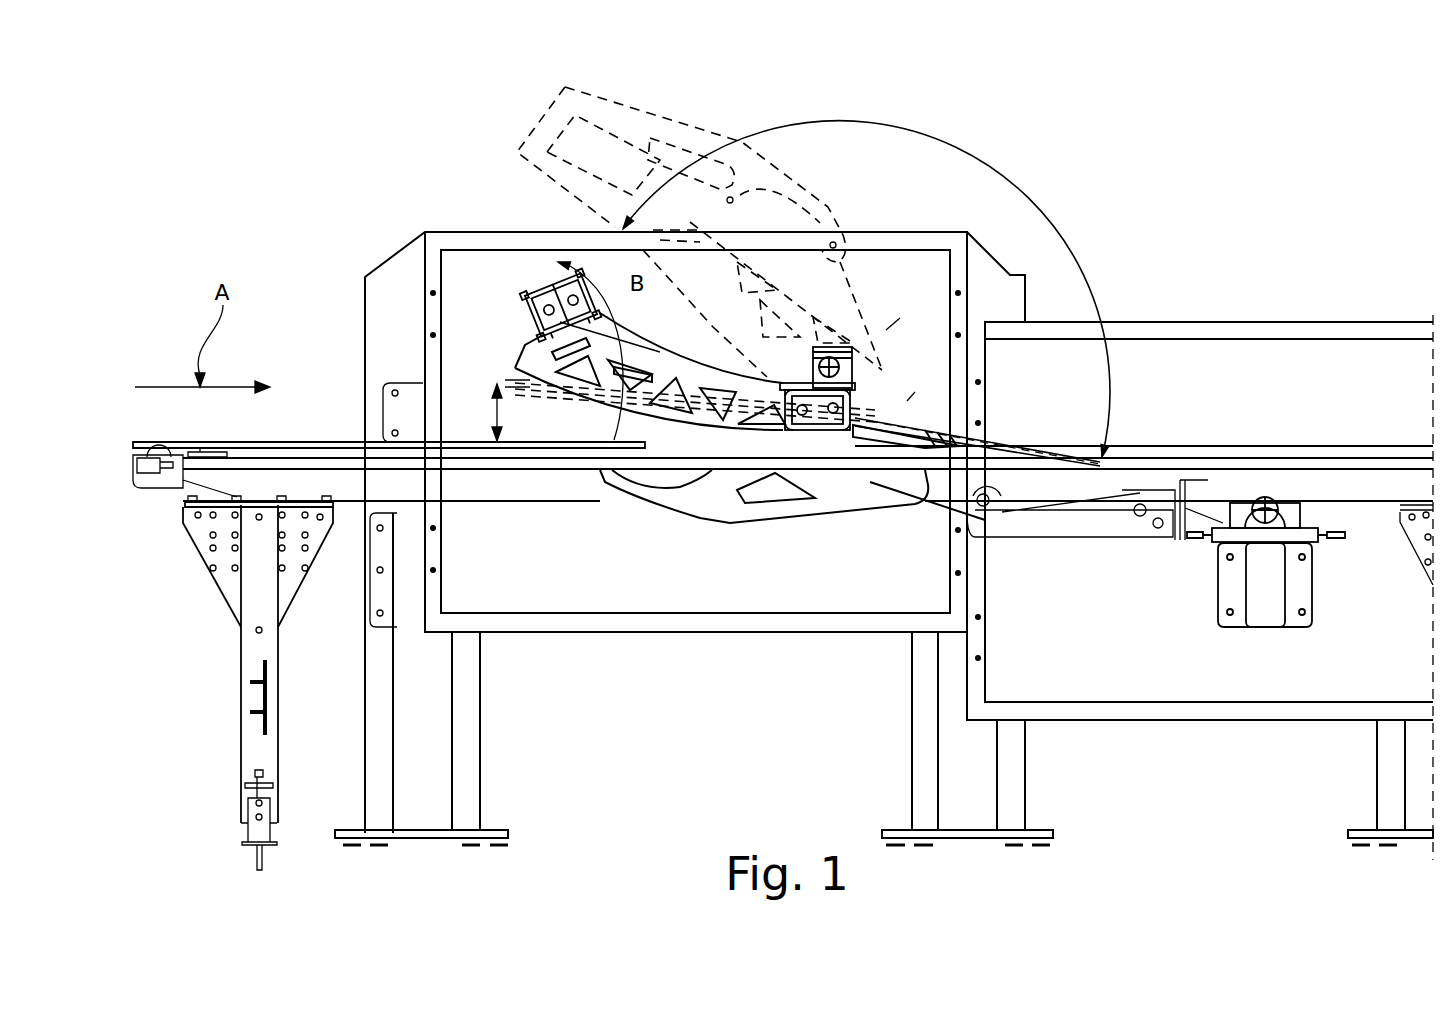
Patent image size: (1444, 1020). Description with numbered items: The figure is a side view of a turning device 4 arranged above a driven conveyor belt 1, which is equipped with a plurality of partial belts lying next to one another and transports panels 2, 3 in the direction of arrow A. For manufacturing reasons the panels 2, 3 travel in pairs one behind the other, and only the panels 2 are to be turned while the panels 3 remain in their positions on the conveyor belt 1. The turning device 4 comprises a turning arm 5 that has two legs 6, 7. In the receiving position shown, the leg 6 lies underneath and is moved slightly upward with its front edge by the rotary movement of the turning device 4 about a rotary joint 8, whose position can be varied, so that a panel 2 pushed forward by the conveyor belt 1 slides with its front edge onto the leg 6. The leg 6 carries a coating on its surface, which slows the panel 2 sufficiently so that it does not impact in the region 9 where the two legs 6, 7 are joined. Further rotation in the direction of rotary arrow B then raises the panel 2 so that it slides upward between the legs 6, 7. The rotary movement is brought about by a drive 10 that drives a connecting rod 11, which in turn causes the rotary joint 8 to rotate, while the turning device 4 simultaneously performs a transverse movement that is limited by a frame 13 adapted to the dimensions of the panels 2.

The conveyor belt 1 is at (1172, 433).
The panel 2 is at (460, 428).
The panel 3 is at (288, 428).
The turning device 4 is at (940, 148).
The turning arm 5 is at (907, 401).
The leg 6 is at (618, 117).
The leg 7 is at (612, 212).
The rotary joint 8 is at (548, 283).
The region 9 is at (890, 473).
The drive 10 is at (1258, 582).
The connecting rod 11 is at (628, 385).
The frame 13 is at (503, 380).